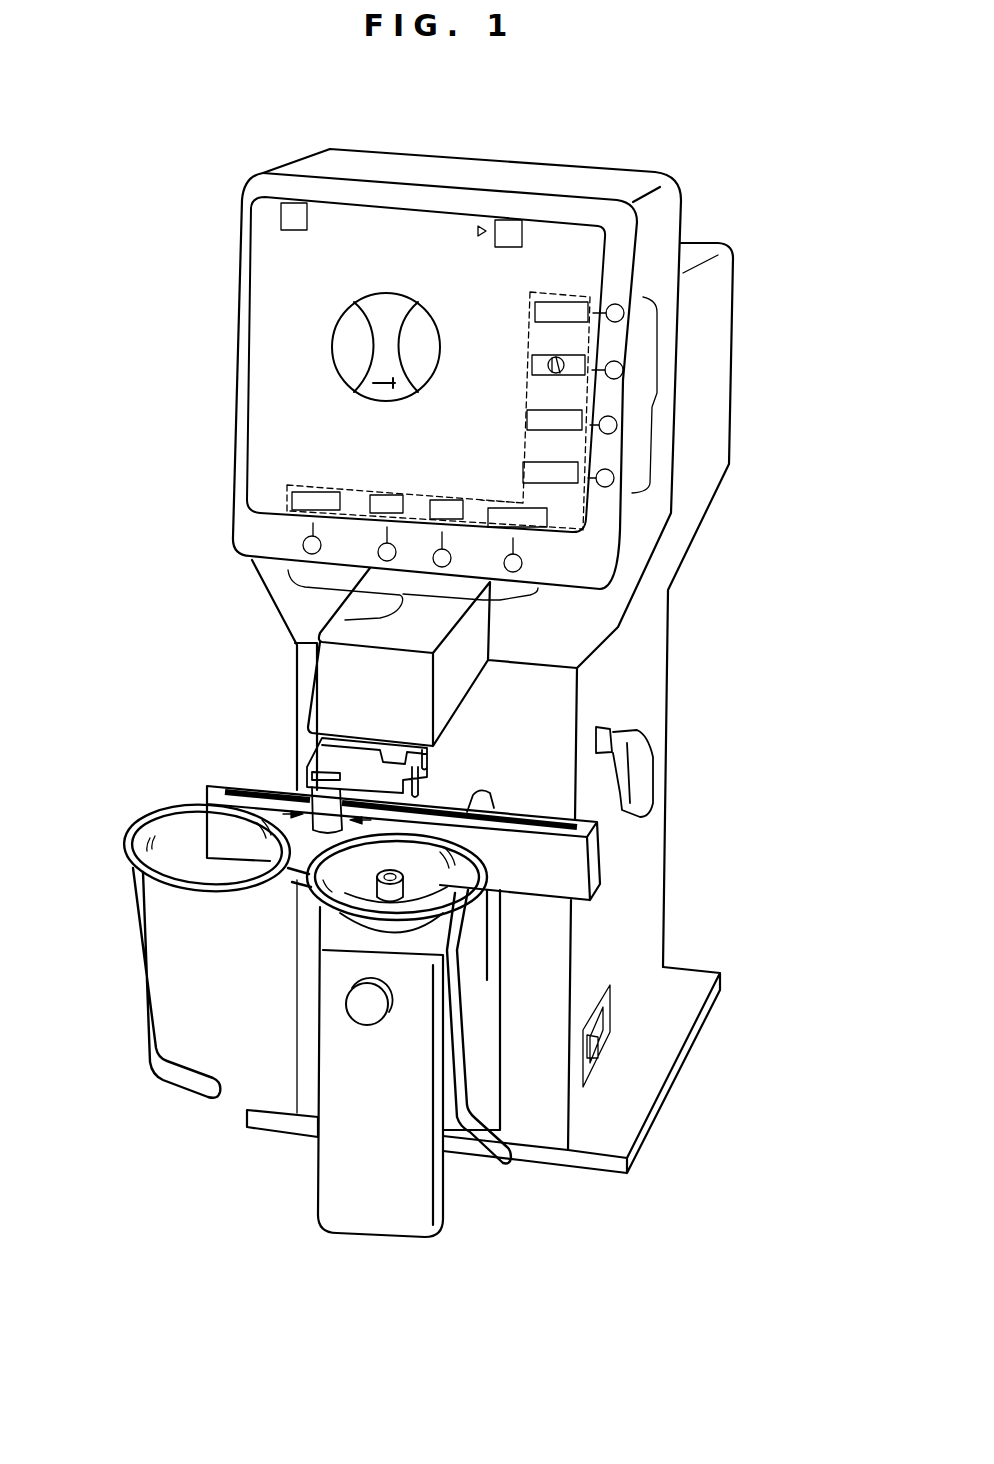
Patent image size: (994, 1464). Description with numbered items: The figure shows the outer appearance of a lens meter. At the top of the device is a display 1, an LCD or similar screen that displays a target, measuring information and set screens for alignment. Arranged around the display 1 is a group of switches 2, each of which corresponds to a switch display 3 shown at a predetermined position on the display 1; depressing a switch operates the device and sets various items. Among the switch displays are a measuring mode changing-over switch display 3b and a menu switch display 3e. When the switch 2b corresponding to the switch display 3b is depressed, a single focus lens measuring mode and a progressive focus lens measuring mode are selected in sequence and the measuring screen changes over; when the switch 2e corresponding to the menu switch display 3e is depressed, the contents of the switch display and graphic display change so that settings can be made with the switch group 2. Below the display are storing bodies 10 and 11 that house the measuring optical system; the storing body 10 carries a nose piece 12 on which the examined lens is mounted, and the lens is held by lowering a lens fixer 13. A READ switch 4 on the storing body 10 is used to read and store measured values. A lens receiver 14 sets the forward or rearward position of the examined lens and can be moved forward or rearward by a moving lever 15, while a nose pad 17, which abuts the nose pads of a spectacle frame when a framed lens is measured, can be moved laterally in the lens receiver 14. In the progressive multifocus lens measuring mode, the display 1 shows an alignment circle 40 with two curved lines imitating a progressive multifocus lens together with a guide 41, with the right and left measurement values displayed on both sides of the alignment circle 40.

The display 1 is at (285, 347).
The group of switches 2 is at (677, 390).
The switch 2b is at (614, 360).
The switch 2e is at (302, 545).
The switch display 3 is at (553, 297).
The measuring mode changing-over switch display 3b is at (532, 376).
The menu switch display 3e is at (320, 487).
The READ switch 4 is at (367, 1003).
The storing body 10 is at (417, 1193).
The storing body 11 is at (350, 678).
The nose piece 12 is at (352, 893).
The lens fixer 13 is at (300, 766).
The lens receiver 14 is at (550, 877).
The moving lever 15 is at (640, 780).
The nose pad 17 is at (310, 857).
The alignment circle 40 is at (387, 293).
The guide 41 is at (372, 384).